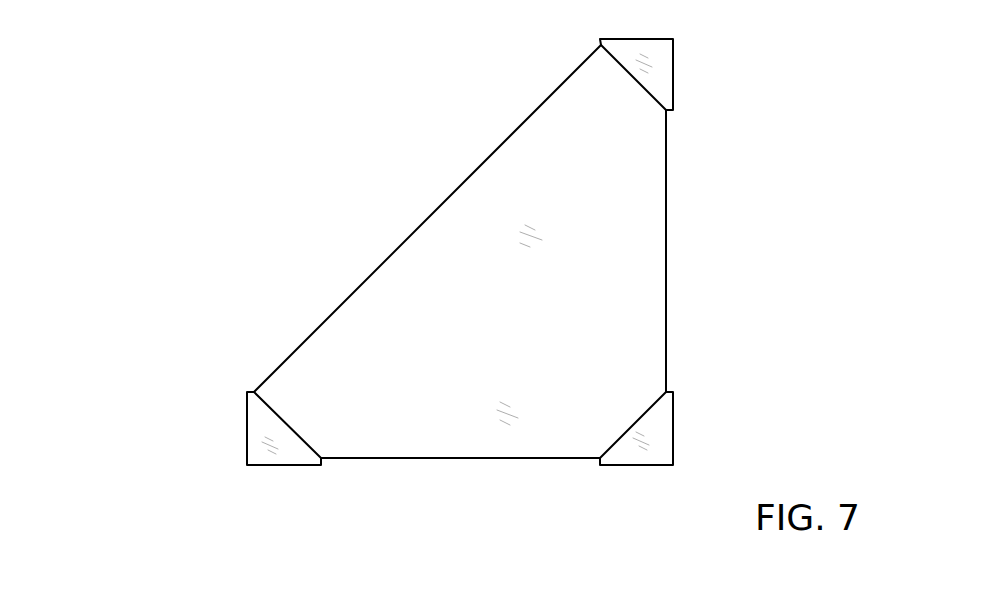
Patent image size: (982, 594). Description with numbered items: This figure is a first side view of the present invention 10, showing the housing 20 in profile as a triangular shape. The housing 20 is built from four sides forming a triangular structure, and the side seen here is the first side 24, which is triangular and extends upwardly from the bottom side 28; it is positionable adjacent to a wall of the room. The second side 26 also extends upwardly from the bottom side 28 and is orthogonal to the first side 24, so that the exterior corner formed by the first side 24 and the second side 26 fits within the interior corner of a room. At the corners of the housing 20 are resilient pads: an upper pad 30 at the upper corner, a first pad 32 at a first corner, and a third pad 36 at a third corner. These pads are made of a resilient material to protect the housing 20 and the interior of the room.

The panel assembly 10 is at (421, 281).
The housing 20 is at (455, 297).
The first side 24 is at (373, 327).
The second side 26 is at (666, 213).
The bottom side 28 is at (441, 458).
The upper pad 30 is at (665, 88).
The first pad 32 is at (255, 418).
The third pad 36 is at (665, 418).